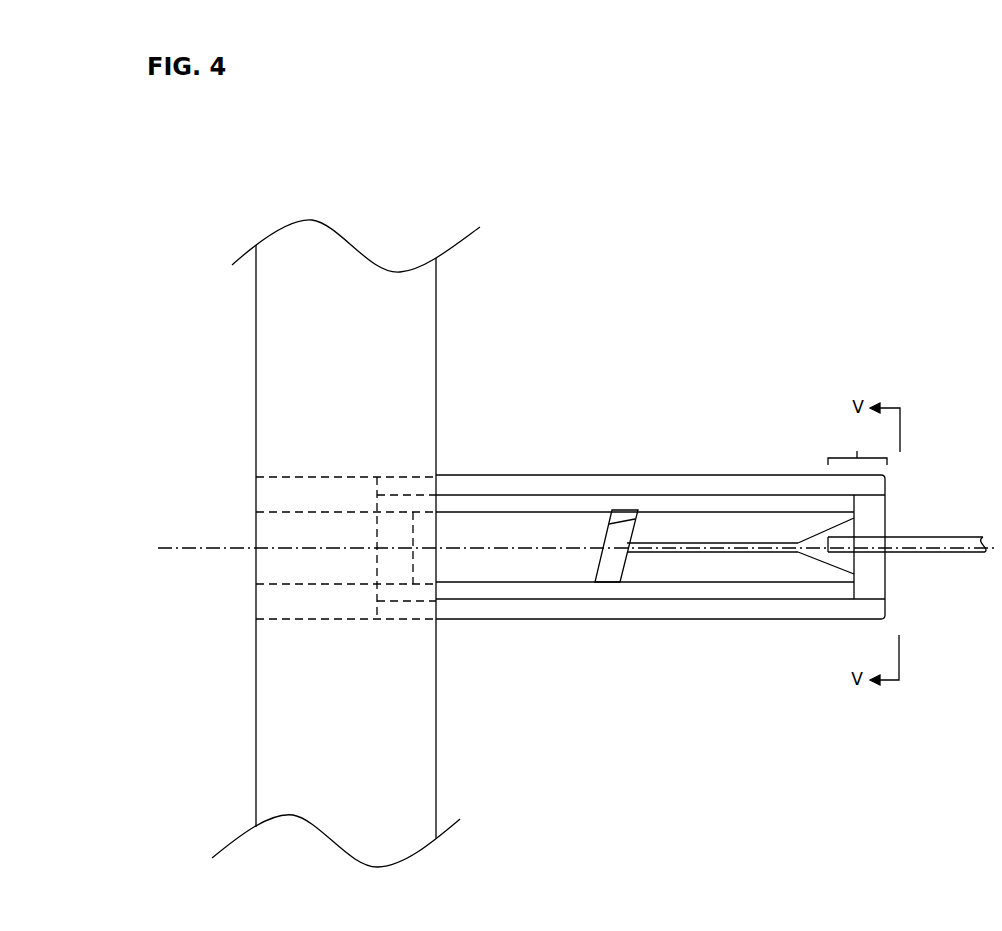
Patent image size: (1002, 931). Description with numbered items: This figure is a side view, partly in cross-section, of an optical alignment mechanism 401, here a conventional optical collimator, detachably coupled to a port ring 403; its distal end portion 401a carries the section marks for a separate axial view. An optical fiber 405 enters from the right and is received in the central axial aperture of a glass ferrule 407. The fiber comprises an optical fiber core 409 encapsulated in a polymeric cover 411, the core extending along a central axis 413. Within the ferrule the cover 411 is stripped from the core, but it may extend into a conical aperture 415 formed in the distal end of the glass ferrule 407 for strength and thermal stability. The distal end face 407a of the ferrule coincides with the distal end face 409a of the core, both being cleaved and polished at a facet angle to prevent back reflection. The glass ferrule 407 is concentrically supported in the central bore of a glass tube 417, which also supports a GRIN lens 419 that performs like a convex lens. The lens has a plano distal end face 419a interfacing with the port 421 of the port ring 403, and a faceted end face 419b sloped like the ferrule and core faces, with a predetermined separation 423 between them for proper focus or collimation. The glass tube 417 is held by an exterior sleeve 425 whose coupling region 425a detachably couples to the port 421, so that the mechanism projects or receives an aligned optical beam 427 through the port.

The optical alignment mechanism 401 is at (508, 448).
The distal end portion of delivery device 401a is at (857, 514).
The port ring 403 is at (343, 245).
The optical fiber 405 is at (937, 555).
The glass ferrule 407 is at (747, 570).
The distal end face of glass ferrule 407a is at (603, 573).
The optical fiber core 409 is at (687, 545).
The distal end face of optical fiber core 409a is at (603, 547).
The polymeric cover 411 is at (955, 537).
The central axis 413 is at (165, 556).
The conical aperture 415 is at (848, 530).
The glass tube 417 is at (663, 590).
The GRIN lens 419 is at (545, 530).
The plano distal end face of GRIN lens 419a is at (412, 575).
The faceted distal end face of GRIN lens 419b is at (638, 512).
The port 421 is at (295, 572).
The separation 423 is at (607, 575).
The exterior sleeve 425 is at (765, 483).
The coupling region 425a is at (404, 477).
The optical beam 427 is at (227, 527).